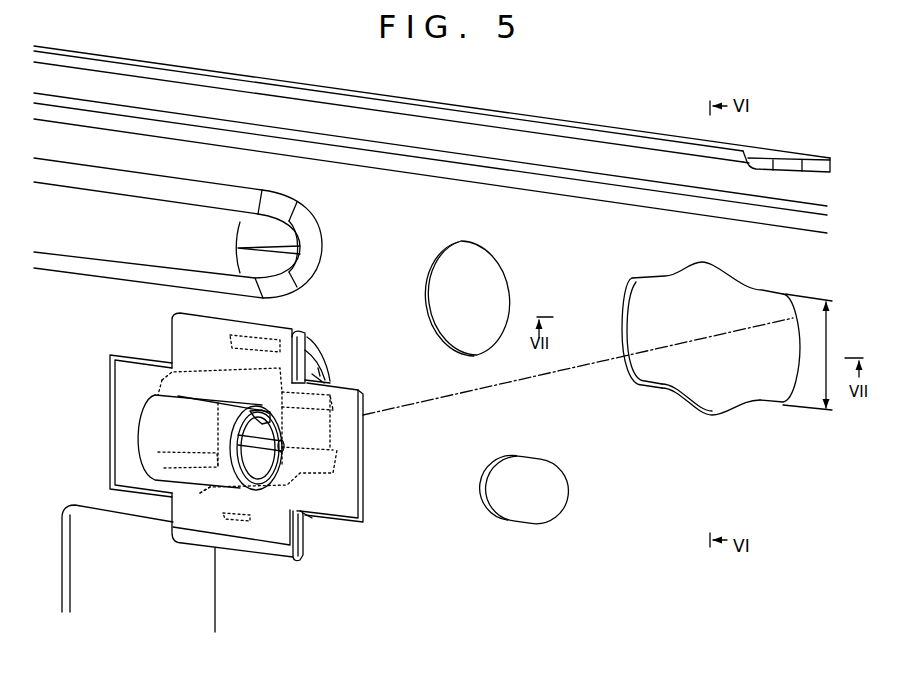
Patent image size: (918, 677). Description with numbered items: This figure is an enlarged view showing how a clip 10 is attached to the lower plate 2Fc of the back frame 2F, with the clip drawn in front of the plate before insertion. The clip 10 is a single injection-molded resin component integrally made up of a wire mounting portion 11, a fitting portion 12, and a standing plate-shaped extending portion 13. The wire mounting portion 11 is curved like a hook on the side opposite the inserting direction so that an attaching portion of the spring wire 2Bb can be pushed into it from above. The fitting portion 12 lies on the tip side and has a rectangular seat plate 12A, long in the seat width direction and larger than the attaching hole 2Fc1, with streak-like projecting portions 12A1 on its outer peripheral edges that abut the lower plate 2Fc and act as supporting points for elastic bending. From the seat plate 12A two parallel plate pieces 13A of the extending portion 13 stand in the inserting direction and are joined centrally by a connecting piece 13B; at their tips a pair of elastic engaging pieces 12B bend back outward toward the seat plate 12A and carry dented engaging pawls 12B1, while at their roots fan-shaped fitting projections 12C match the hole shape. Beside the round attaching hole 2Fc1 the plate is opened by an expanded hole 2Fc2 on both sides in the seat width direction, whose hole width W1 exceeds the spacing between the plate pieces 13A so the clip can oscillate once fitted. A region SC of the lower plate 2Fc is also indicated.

The clip 10 is at (216, 419).
The wire mounting portion 11 is at (144, 442).
The spring wire 2Bb is at (171, 436).
The fitting portion 12 is at (264, 435).
The seat plate 12A is at (345, 407).
The projecting portion 12A1 is at (302, 337).
The elastic engaging piece 12B is at (315, 355).
The engaging pawl 12B1 is at (240, 330).
The fitting projection 12C is at (327, 377).
The extending portion 13 is at (293, 433).
The plate piece 13A is at (345, 455).
The connecting piece 13B is at (345, 418).
The lower plate 2Fc is at (432, 172).
The back frame 2F is at (370, 193).
The attaching hole 2Fc1 is at (707, 390).
The expanded hole 2Fc2 is at (647, 364).
The panel surface area SC is at (553, 230).
The hole width W1 is at (807, 352).